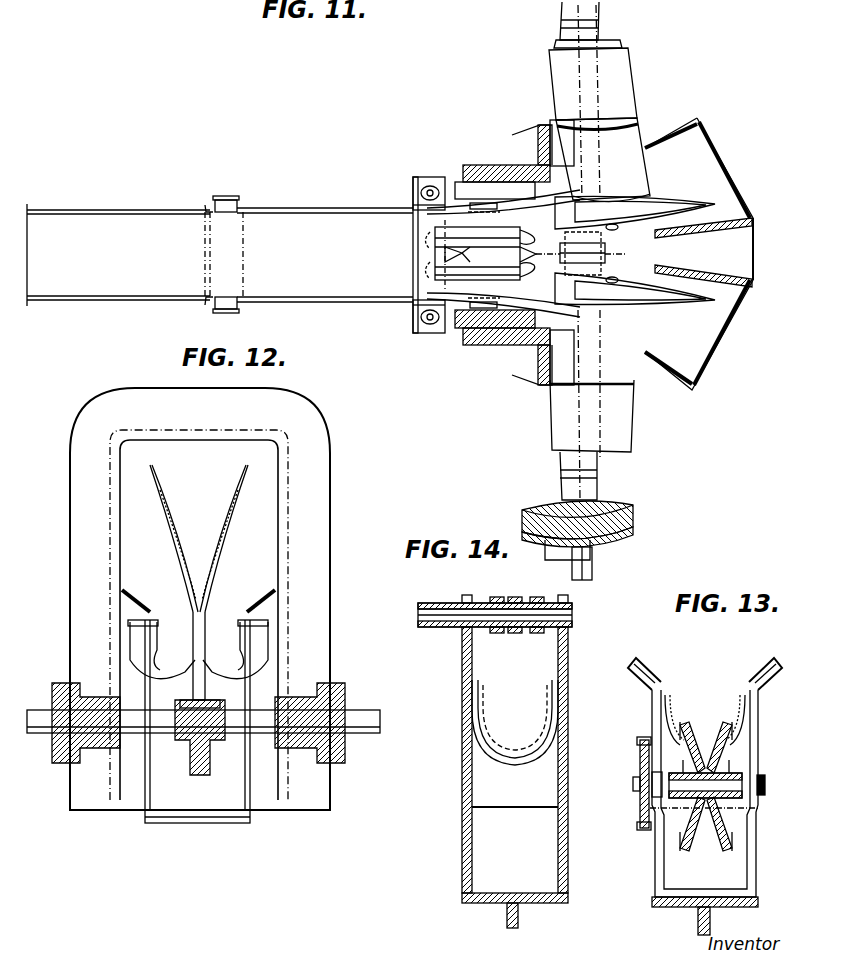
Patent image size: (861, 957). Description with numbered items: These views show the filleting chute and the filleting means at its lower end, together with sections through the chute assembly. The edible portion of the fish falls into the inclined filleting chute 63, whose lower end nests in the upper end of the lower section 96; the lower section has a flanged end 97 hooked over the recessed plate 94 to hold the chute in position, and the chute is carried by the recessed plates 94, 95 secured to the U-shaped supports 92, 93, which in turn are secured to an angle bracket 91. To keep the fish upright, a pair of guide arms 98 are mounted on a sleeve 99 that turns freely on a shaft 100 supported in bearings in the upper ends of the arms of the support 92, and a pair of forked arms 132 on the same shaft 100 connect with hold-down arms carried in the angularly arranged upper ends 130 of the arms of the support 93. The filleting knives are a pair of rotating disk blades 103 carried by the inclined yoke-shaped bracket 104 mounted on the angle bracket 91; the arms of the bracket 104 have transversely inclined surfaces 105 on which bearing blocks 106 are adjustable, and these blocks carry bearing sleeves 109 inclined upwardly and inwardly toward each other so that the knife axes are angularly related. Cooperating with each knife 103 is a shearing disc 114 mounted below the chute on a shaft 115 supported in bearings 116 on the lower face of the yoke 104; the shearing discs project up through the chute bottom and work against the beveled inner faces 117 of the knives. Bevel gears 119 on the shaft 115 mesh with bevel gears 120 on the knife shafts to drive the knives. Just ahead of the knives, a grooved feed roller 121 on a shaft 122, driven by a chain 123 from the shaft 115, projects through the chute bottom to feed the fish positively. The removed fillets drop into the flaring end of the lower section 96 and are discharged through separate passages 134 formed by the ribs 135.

In FIG. 11, the filleting chute 63 is at (66, 228).
In FIG. 14, the filleting chute 63 is at (483, 730).
In FIG. 11, the flanged end 97 is at (204, 205).
In FIG. 11, the recessed plate 94 is at (222, 200).
In FIG. 14, the recessed plate 94 is at (472, 807).
In FIG. 11, the U-shaped support 92 is at (242, 208).
In FIG. 14, the U-shaped support 92 is at (466, 760).
In FIG. 11, the lower section of the feed chute 96 is at (305, 208).
In FIG. 14, the lower section of the feed chute 96 is at (500, 757).
In FIG. 13, the lower section of the feed chute 96 is at (676, 725).
In FIG. 11, the angularly arranged upper ends 130 is at (430, 185).
In FIG. 13, the angularly arranged upper ends 130 is at (638, 678).
In FIG. 11, the grooved feed roller 121 is at (455, 232).
In FIG. 13, the grooved feed roller 121 is at (690, 830).
In FIG. 11, the shaft 122 is at (452, 318).
In FIG. 13, the shaft 122 is at (735, 778).
In FIG. 11, the yoke-shaped bracket 104 is at (500, 345).
In FIG. 12, the yoke-shaped bracket 104 is at (310, 578).
In FIG. 11, the transversely inclined surfaces 105 is at (540, 132).
In FIG. 11, the bearing blocks 106 is at (560, 128).
In FIG. 11, the bearing sleeves 109 is at (604, 95).
In FIG. 11, the passages 134 is at (705, 162).
In FIG. 11, the ribs 135 is at (748, 218).
In FIG. 11, the bevels 117 is at (660, 200).
In FIG. 12, the bevels 117 is at (152, 466).
In FIG. 11, the rotating disk blades 103 is at (680, 228).
In FIG. 12, the rotating disk blades 103 is at (160, 525).
In FIG. 11, the shearing disc 114 is at (612, 253).
In FIG. 12, the shearing disc 114 is at (198, 762).
In FIG. 11, the bevel gears 119 is at (626, 512).
In FIG. 11, the bevel gears 120 is at (620, 535).
In FIG. 11, the shaft 115 is at (594, 568).
In FIG. 12, the shaft 115 is at (368, 724).
In FIG. 12, the bearings 116 is at (60, 695).
In FIG. 12, the U-shaped support 93 is at (150, 782).
In FIG. 13, the U-shaped support 93 is at (658, 855).
In FIG. 14, the shaft 100 is at (443, 612).
In FIG. 14, the arms 132 is at (480, 588).
In FIG. 14, the sleeve 99 is at (508, 615).
In FIG. 14, the guide arms 98 is at (530, 620).
In FIG. 14, the angle bracket 91 is at (480, 898).
In FIG. 13, the angle bracket 91 is at (680, 907).
In FIG. 13, the chain 123 is at (640, 748).
In FIG. 13, the recessed plate 95 is at (742, 802).